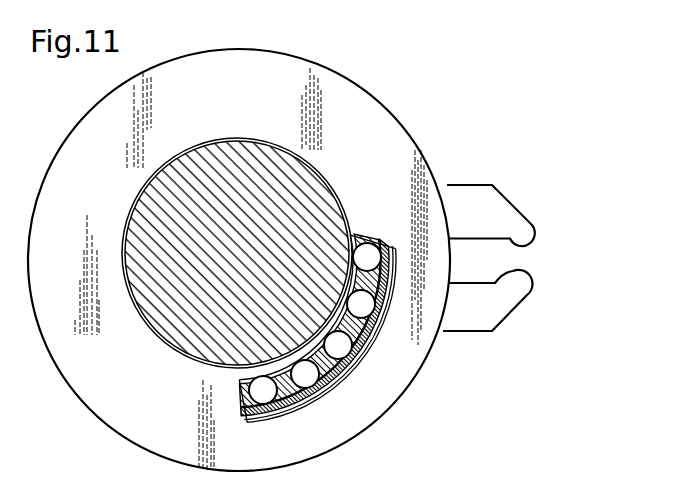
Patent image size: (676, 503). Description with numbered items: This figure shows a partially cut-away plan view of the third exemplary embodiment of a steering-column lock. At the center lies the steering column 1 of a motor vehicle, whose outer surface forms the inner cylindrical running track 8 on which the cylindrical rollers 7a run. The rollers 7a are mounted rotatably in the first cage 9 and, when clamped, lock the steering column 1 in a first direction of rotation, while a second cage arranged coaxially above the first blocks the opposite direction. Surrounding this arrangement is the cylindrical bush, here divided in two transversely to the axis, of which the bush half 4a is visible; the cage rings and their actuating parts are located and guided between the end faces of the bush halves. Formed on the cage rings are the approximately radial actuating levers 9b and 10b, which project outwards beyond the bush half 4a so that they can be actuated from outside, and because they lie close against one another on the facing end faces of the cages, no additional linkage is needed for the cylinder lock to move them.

The steering column 1 is at (313, 191).
The bush half 4a is at (383, 123).
The cylindrical rollers 7a is at (306, 388).
The inner cylindrical running track 8 is at (198, 146).
The first cage 9 is at (365, 330).
The actuating lever 9b is at (515, 297).
The actuating lever 10b is at (512, 213).